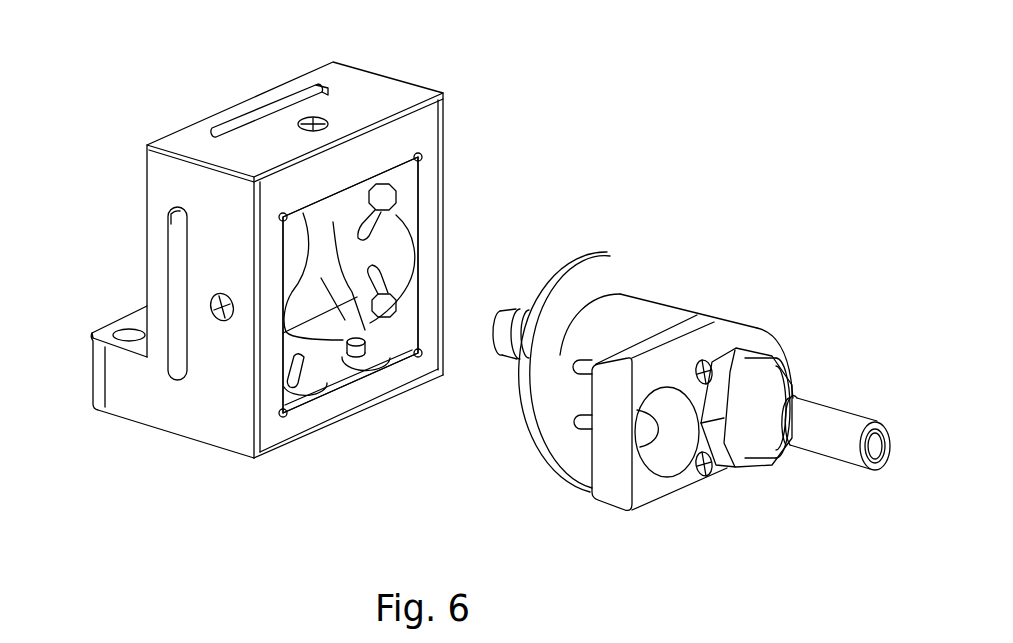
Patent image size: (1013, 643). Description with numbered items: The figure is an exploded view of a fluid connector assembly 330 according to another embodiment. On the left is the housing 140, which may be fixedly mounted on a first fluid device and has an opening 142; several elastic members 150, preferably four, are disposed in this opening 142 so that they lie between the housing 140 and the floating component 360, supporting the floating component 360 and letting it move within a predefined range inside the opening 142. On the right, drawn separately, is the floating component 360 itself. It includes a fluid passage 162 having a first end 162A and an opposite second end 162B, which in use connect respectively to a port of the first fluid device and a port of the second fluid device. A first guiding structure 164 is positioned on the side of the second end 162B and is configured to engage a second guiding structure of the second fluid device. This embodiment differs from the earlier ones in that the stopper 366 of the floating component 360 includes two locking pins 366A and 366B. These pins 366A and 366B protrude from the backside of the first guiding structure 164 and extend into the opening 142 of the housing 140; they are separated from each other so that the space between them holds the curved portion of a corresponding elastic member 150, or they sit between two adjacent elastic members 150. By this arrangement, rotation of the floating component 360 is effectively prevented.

The fluid connector assembly 330 is at (68, 42).
The housing 140 is at (302, 83).
The opening 142 is at (404, 332).
The elastic members 150 is at (350, 200).
The floating component 360 is at (760, 300).
The fluid passage 162 is at (667, 312).
The first end 162A is at (513, 318).
The second end 162B is at (832, 446).
The first guiding structure 164 is at (660, 494).
The stopper 366 is at (565, 486).
The locking pin 366A is at (577, 424).
The locking pin 366B is at (573, 366).